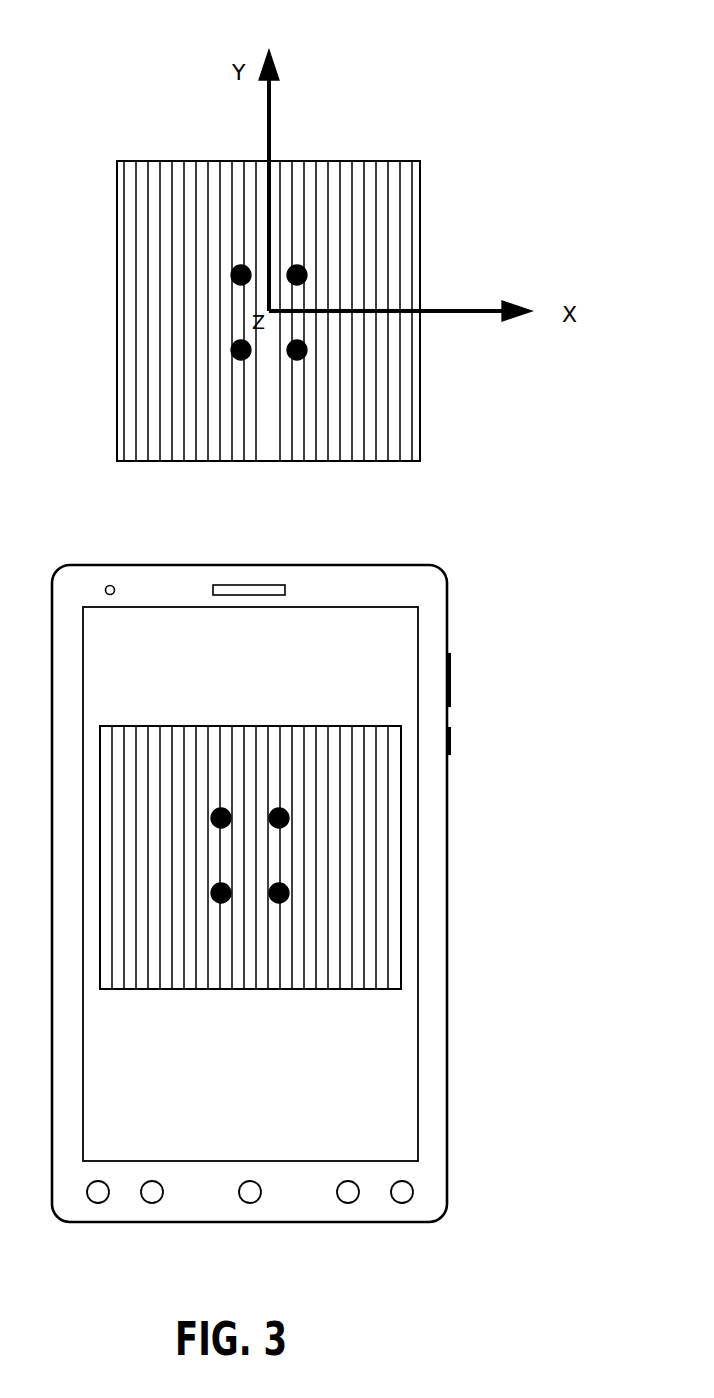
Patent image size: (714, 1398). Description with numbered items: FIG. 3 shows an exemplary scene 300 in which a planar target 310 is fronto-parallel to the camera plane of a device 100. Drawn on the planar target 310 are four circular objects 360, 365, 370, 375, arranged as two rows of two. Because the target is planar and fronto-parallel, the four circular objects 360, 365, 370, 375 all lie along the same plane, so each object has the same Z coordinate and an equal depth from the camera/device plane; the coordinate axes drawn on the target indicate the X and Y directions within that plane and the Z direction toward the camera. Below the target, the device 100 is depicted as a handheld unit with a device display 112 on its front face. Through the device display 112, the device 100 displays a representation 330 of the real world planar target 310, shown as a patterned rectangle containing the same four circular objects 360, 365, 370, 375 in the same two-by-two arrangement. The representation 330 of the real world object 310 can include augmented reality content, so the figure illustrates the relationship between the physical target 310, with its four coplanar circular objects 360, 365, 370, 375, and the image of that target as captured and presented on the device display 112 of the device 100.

The calibration environment 300 is at (553, 52).
The planar target 310 is at (420, 192).
The circular object 360 is at (242, 265).
The circular object 365 is at (241, 340).
The circular object 370 is at (306, 274).
The circular object 375 is at (306, 350).
The device 100 is at (120, 565).
The device display 112 is at (244, 726).
The representation 330 is at (382, 800).